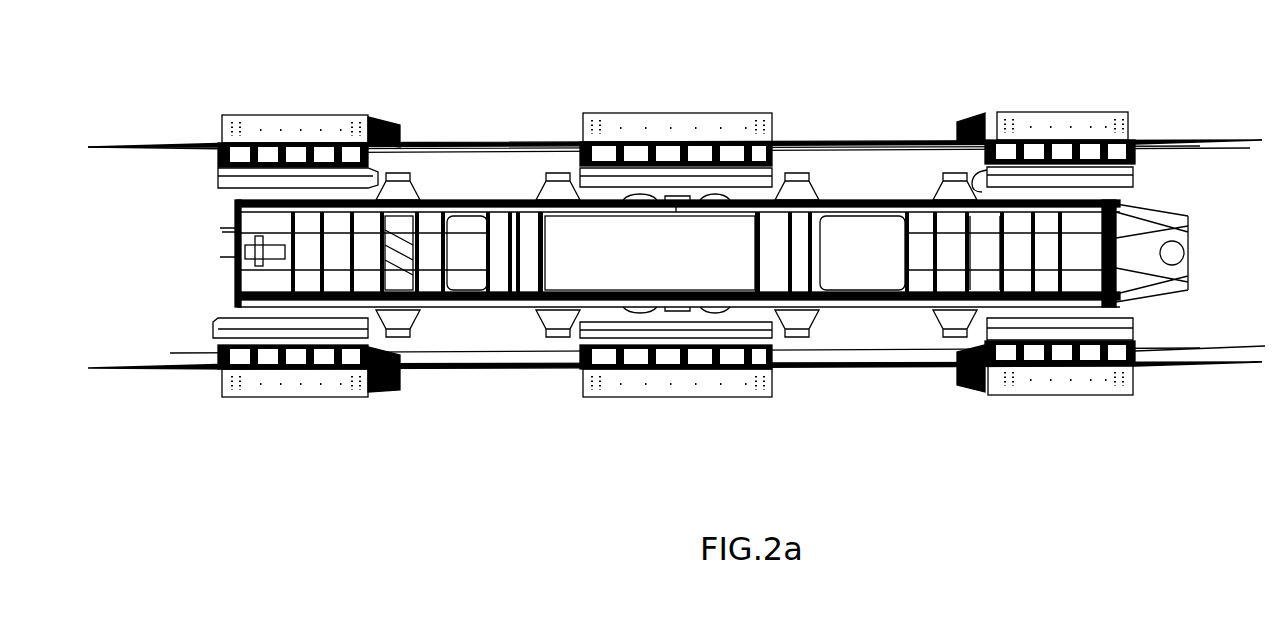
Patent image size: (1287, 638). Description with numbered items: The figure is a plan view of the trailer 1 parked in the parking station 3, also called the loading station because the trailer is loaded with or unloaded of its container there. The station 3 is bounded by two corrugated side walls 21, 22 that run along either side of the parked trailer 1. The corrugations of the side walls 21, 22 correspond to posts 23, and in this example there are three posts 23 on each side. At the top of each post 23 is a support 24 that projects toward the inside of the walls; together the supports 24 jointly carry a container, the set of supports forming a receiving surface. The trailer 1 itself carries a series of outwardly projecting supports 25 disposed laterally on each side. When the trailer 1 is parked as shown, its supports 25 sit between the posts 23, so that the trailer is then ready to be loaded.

The trailer 1 is at (235, 287).
The parking station 3 is at (1207, 325).
The corrugated side wall 21 is at (476, 143).
The corrugated side wall 22 is at (438, 368).
The post 23 is at (400, 130).
The support 24 is at (223, 188).
The outwardly projecting support 25 is at (417, 187).